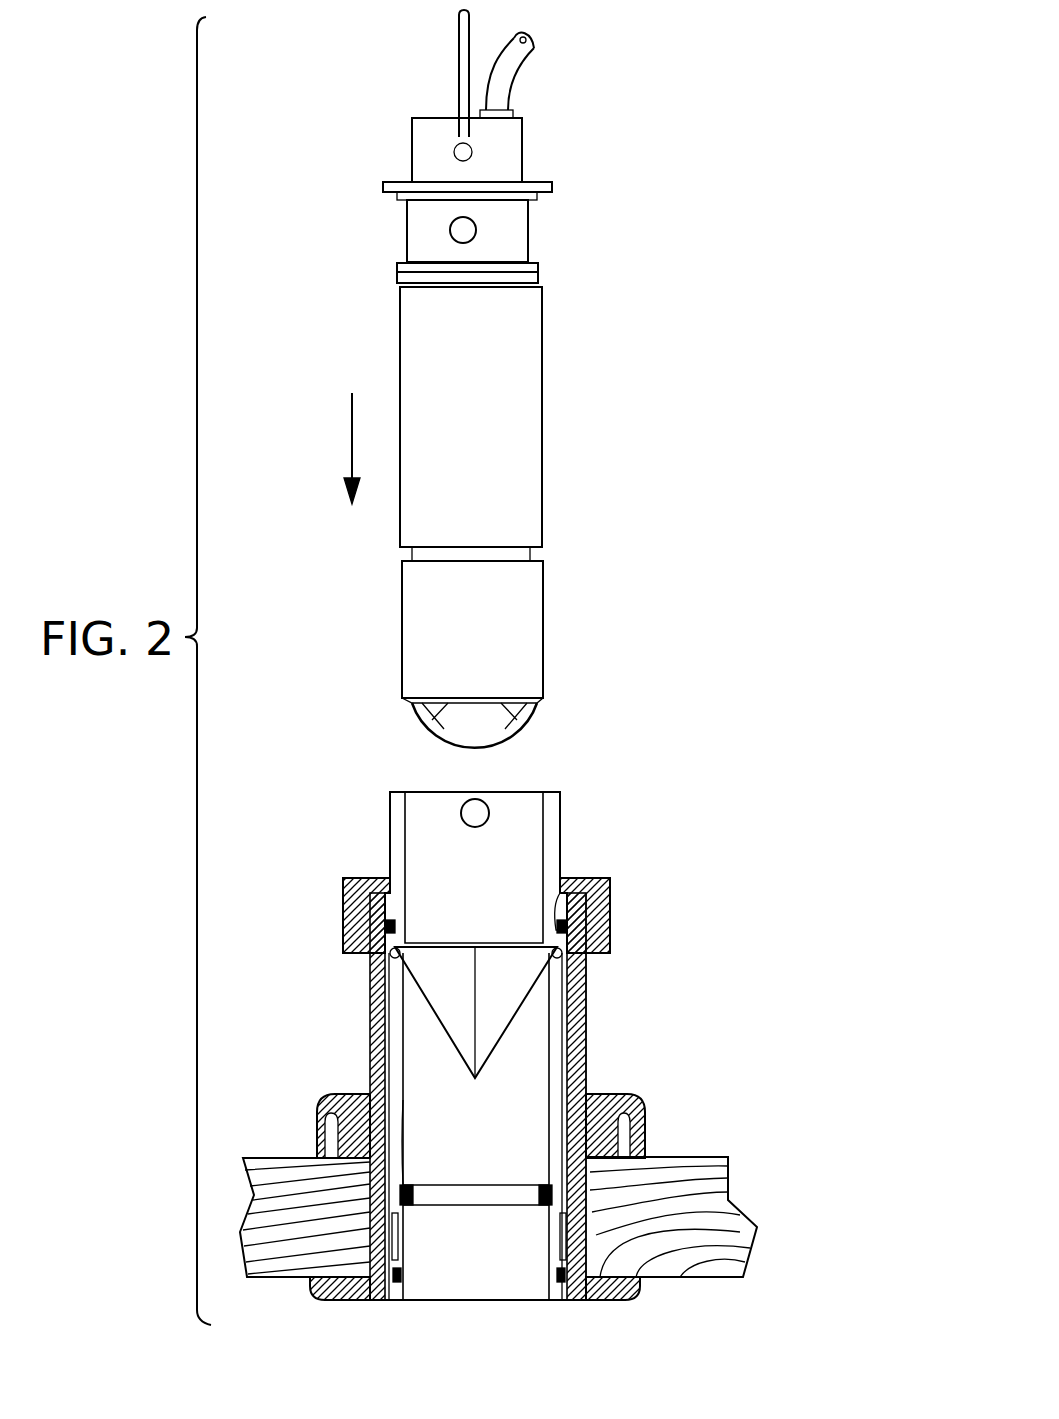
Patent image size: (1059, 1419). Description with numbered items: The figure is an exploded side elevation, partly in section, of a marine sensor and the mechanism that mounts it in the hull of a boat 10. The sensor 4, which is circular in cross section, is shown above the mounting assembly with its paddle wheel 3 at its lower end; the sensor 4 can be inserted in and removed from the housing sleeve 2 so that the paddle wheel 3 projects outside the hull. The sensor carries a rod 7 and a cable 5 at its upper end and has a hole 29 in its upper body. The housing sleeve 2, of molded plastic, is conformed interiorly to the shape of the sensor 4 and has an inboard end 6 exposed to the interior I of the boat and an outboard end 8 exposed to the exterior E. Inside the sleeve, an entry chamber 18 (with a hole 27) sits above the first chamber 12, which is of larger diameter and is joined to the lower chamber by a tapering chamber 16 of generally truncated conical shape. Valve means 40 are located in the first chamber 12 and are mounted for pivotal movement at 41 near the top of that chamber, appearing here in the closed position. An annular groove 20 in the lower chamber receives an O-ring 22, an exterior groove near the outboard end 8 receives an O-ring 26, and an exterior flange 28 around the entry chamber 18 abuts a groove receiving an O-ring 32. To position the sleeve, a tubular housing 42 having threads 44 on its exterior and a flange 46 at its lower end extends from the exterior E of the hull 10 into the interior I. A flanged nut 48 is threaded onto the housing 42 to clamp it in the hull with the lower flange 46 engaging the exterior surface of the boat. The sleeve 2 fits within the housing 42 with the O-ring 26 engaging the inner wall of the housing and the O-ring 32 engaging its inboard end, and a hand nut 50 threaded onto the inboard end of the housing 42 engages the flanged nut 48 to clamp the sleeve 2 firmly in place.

The housing sleeve 2 is at (568, 825).
The paddle wheel 3 is at (437, 736).
The sensor 4 is at (590, 383).
The cable 5 is at (522, 60).
The inboard end 6 is at (527, 765).
The rod 7 is at (458, 36).
The outboard end 8 is at (472, 1303).
The hull of a boat 10 is at (700, 1157).
The first chamber 12 is at (403, 1012).
The tapering chamber 16 is at (410, 1143).
The entry chamber 18 is at (404, 823).
The annular groove 20 is at (455, 1185).
The O-ring 22 is at (536, 1185).
The O-ring 26 is at (395, 1288).
The hole 27 is at (490, 813).
The exterior flange 28 is at (382, 882).
The hole 29 is at (477, 229).
The O-ring 32 is at (560, 880).
The valve means 40 is at (469, 940).
The pivot 41 is at (372, 963).
The tubular housing 42 is at (585, 1002).
The threads 44 is at (586, 1043).
The flange 46 is at (605, 1302).
The flanged nut 48 is at (628, 1110).
The hand nut 50 is at (343, 897).
The interior I is at (265, 1157).
The exterior E is at (264, 1282).